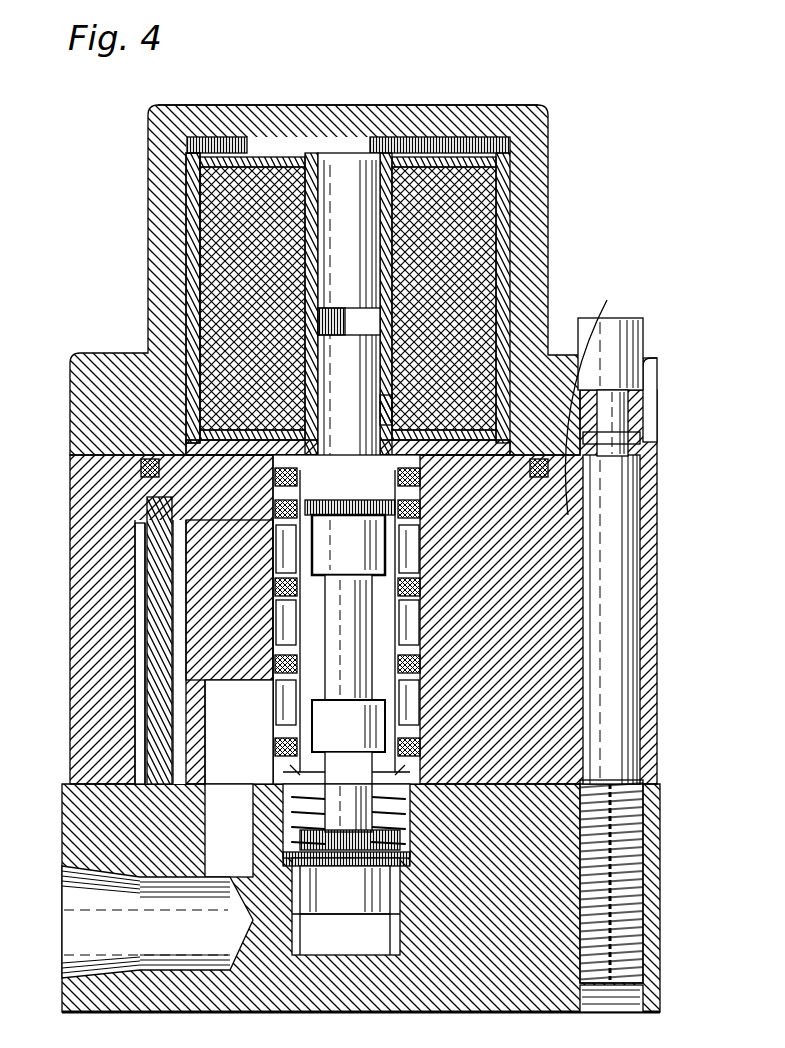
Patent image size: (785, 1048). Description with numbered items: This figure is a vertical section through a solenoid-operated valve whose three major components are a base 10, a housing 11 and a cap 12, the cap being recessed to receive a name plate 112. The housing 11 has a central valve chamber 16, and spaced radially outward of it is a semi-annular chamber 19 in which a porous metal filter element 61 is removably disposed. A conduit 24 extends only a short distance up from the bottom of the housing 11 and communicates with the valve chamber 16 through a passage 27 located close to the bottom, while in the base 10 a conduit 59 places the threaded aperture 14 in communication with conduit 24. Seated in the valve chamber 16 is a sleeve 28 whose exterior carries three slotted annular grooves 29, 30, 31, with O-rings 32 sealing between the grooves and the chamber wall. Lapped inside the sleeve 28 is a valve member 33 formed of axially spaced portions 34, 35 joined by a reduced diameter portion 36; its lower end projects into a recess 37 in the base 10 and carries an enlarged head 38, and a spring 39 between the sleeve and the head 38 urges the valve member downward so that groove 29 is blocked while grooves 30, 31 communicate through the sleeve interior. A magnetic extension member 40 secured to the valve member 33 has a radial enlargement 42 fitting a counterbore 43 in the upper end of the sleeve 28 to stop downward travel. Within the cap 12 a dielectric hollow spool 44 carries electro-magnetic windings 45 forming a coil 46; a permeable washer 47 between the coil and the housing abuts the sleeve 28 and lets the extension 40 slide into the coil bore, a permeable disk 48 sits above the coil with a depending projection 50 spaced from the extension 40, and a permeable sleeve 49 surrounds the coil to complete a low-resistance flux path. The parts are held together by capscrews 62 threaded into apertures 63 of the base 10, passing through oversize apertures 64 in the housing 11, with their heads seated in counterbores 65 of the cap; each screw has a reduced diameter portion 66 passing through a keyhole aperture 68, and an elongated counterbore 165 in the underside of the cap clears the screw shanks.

The base 10 is at (290, 1014).
The housing 11 is at (68, 533).
The cap 12 is at (551, 200).
The internally threaded aperture 14 is at (120, 895).
The central valve chamber 16 is at (352, 540).
The semi-annular chamber 19 is at (135, 575).
The conduit 24 is at (215, 718).
The passage 27 is at (239, 732).
The sleeve 28 is at (265, 535).
The annular groove 29 is at (432, 545).
The annular groove 30 is at (422, 655).
The annular groove 31 is at (432, 715).
The O-rings 32 is at (422, 510).
The valve member 33 is at (250, 675).
The portion of valve member 34 is at (292, 540).
The portion of valve member 35 is at (285, 773).
The reduced diameter portion 36 is at (340, 625).
The recess 37 is at (262, 838).
The enlarged head 38 is at (330, 900).
The spring 39 is at (425, 835).
The extension member 40 is at (390, 412).
The radial enlargement 42 is at (330, 490).
The counterbore 43 is at (400, 487).
The dielectric hollow spool 44 is at (380, 262).
The electro-magnetic windings 45 is at (503, 265).
The coil 46 is at (456, 290).
The washer 47 is at (250, 457).
The disk 48 is at (510, 147).
The sleeve 49 is at (190, 210).
The projection 50 is at (330, 195).
The conduit 59 is at (210, 820).
The filter element 61 is at (150, 610).
The capscrews 62 is at (642, 852).
The apertures 63 is at (650, 1000).
The oversize apertures 64 is at (640, 625).
The counterbores 65 is at (646, 370).
The reduced diameter portion 66 is at (628, 420).
The keyhole shaped through aperture 68 is at (630, 437).
The name plate 112 is at (335, 104).
The elongated counterbore 165 is at (605, 397).